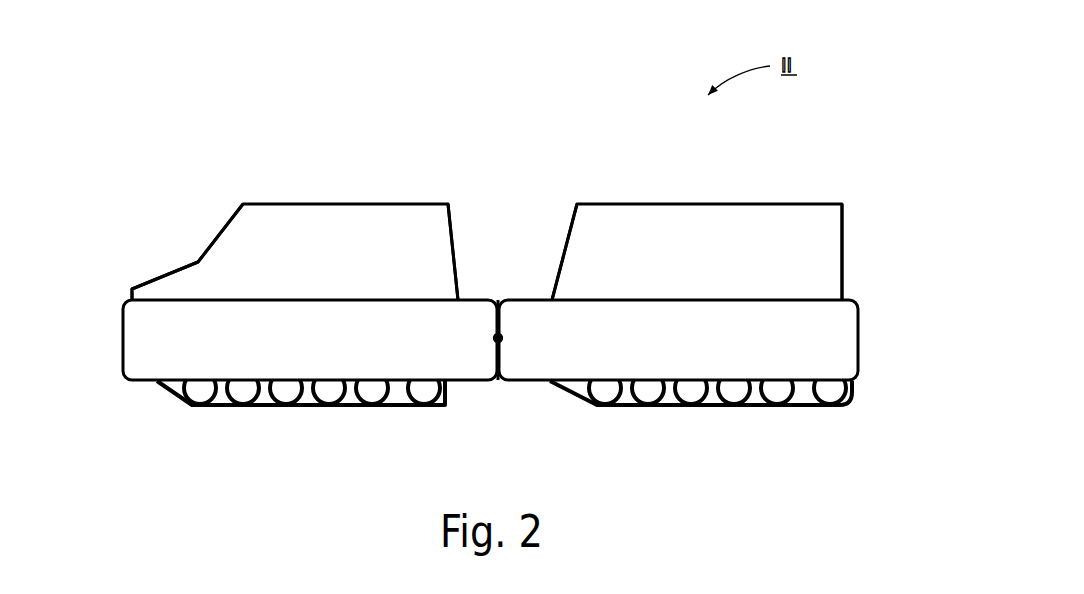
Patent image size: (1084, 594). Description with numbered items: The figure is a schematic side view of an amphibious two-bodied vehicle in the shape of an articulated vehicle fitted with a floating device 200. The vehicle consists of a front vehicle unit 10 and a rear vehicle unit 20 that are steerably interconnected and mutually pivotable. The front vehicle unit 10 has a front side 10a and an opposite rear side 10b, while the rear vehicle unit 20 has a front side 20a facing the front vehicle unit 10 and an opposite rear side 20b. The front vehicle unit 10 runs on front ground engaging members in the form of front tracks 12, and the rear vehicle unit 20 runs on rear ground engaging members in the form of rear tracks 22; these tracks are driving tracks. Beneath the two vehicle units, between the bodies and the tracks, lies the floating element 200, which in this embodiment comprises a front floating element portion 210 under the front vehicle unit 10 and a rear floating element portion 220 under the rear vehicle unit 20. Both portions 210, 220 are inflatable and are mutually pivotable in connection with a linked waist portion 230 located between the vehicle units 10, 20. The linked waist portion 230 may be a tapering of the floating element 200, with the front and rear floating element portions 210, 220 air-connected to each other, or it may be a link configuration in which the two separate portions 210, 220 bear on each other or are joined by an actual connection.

The front vehicle unit 10 is at (355, 203).
The front side 10a is at (213, 243).
The rear side 10b is at (452, 243).
The front tracks 12 is at (302, 409).
The rear vehicle unit 20 is at (670, 201).
The front side 20a is at (568, 236).
The rear side 20b is at (843, 253).
The rear tracks 22 is at (740, 409).
The floating device 200 is at (498, 383).
The front floating element portion 210 is at (150, 386).
The rear floating element portion 220 is at (550, 384).
The linked waist portion 230 is at (499, 336).